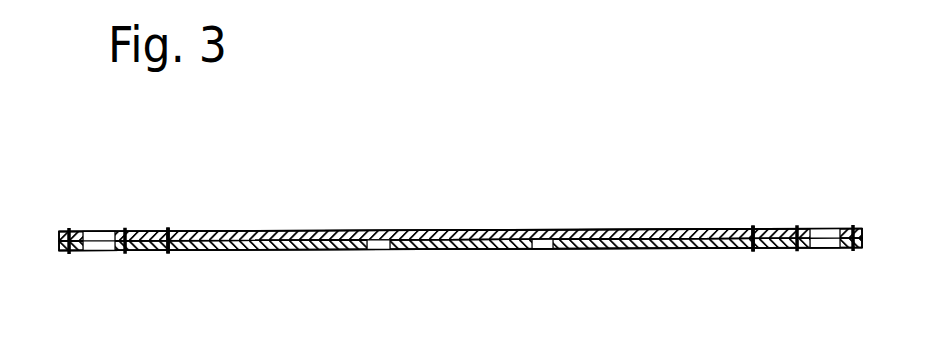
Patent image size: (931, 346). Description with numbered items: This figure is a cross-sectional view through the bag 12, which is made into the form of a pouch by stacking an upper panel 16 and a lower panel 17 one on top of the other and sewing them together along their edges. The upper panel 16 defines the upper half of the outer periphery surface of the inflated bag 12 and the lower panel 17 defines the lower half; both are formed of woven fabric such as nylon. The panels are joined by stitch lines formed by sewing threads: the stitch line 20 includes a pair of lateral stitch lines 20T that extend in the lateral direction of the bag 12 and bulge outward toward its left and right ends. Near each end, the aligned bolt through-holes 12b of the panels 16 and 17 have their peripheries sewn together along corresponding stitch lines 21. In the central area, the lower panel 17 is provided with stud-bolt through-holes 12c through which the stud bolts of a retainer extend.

The bag 12 is at (539, 206).
The through-hole 12b is at (100, 230).
The stud-bolt through-hole 12c is at (380, 251).
The upper panel 16 is at (238, 230).
The lower panel 17 is at (207, 251).
The stitch line 20 is at (168, 229).
The lateral stitch line 20T is at (456, 188).
The stitch line 21 is at (69, 229).